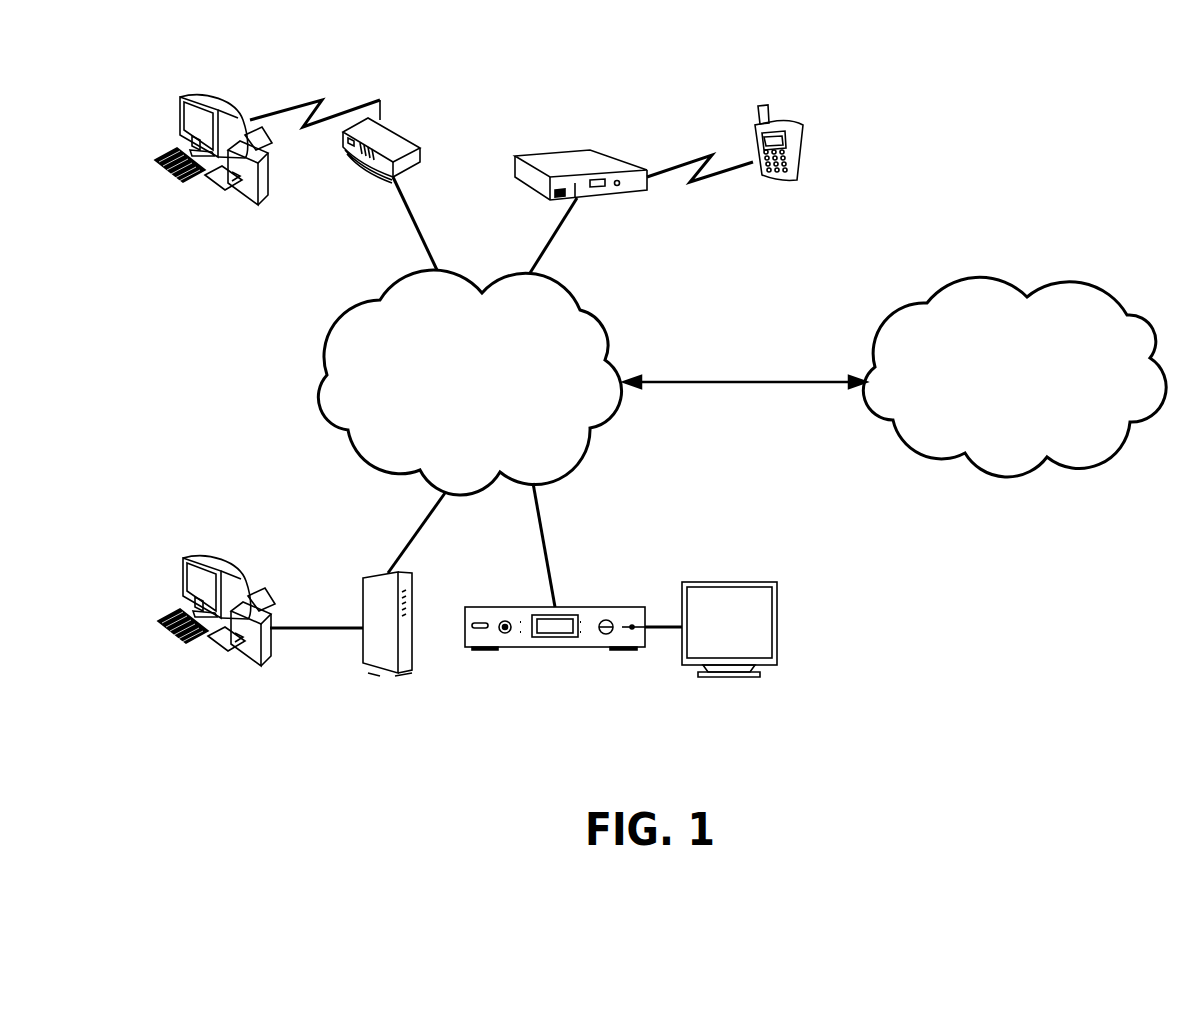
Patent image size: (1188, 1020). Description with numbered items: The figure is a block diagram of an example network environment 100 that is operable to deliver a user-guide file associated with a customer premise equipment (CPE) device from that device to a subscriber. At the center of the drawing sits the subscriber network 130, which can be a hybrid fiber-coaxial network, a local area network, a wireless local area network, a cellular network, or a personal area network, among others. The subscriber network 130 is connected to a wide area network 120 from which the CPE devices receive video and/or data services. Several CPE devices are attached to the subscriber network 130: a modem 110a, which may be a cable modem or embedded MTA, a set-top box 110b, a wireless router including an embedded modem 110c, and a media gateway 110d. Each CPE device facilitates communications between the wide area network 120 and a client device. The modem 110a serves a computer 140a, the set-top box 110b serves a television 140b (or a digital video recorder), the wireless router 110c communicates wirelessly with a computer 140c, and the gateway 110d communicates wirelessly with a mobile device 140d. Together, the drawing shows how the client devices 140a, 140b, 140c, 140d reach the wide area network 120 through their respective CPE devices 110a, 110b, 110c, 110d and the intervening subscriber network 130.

The network environment 100 is at (1093, 688).
The modem 110a is at (393, 677).
The set-top box 110b is at (550, 648).
The wireless router 110c is at (410, 137).
The media gateway 110d is at (590, 148).
The wide area network 120 is at (1007, 480).
The subscriber network 130 is at (400, 478).
The computer 140a is at (195, 557).
The television 140b is at (738, 582).
The computer 140c is at (195, 93).
The mobile device 140d is at (800, 123).